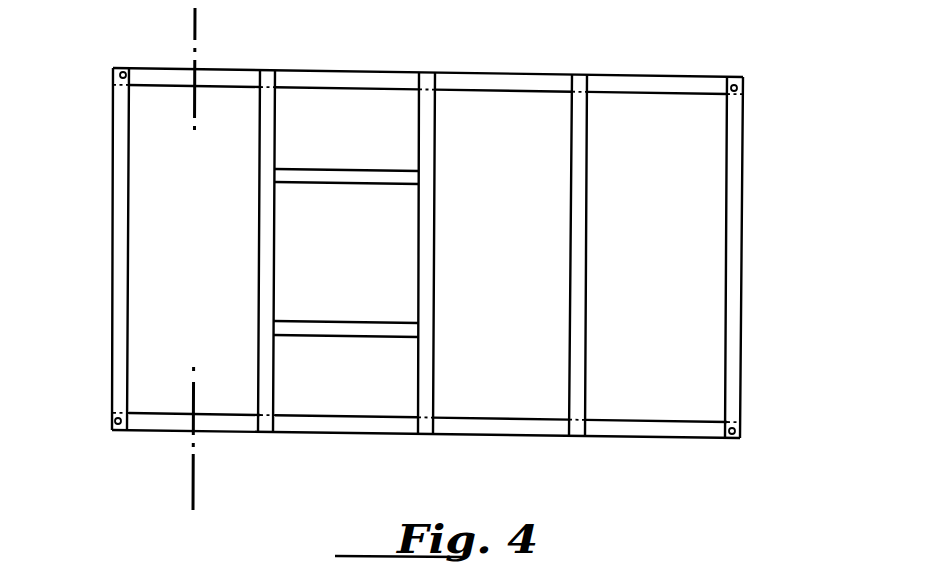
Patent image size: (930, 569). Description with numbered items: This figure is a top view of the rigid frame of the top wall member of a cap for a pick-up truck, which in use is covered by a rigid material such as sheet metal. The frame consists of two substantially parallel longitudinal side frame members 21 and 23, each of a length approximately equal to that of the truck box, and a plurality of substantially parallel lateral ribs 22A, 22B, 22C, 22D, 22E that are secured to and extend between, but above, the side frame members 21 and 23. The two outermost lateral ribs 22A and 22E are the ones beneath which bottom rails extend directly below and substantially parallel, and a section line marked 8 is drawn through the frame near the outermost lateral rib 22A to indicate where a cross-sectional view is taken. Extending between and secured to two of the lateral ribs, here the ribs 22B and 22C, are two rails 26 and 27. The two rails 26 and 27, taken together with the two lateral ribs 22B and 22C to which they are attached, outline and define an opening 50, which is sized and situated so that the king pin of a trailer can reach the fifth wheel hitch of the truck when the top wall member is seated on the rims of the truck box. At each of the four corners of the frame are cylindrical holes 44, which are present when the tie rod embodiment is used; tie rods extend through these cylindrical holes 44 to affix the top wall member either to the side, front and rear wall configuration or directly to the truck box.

The section line 8- 8 is at (205, 27).
The longitudinal side frame member 21 is at (643, 86).
The longitudinal side frame member 23 is at (635, 432).
The lateral rib 22A is at (122, 368).
The lateral rib 22B is at (265, 368).
The lateral rib 22C is at (423, 382).
The lateral rib 22D is at (578, 385).
The lateral rib 22E is at (735, 350).
The rail 27 is at (320, 179).
The rail 26 is at (344, 330).
The opening 50 is at (395, 278).
The cylindrical hole 44 is at (120, 77).